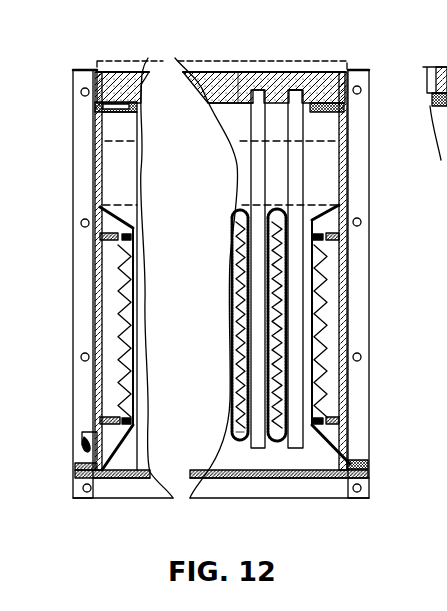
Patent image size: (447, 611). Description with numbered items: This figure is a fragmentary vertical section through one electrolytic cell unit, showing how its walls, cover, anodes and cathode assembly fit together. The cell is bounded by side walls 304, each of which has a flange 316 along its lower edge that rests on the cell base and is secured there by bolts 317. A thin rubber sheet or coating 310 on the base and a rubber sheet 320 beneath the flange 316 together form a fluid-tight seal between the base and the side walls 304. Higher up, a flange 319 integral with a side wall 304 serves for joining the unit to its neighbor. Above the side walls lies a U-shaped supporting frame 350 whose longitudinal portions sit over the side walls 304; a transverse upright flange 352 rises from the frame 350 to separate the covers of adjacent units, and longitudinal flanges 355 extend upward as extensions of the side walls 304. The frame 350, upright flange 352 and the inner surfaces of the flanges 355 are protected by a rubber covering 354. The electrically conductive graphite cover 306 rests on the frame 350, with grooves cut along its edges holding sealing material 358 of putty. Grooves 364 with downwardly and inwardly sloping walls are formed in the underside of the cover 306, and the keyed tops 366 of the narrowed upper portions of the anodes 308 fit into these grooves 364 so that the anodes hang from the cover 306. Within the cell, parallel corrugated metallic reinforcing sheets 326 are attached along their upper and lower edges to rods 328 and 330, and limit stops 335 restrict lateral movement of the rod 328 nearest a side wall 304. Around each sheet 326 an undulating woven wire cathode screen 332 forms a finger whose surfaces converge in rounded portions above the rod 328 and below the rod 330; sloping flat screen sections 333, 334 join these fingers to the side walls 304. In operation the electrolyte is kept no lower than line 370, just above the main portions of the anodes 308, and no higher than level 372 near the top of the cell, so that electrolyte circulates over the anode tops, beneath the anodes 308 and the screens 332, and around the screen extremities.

The side wall 304 is at (348, 142).
The electrically conductive cover 306 is at (132, 73).
The anode 308 is at (252, 212).
The sheet or coating 310 is at (262, 470).
The flange 316 is at (357, 463).
The bolt 317 is at (93, 479).
The flange 319 is at (369, 257).
The sheet 320 is at (369, 480).
The corrugated metallic reinforcing sheet 326 is at (233, 282).
The rod 328 is at (234, 217).
The rod 330 is at (234, 432).
The woven wire cathode screen 332 is at (231, 367).
The sloping flat screen section 333 is at (315, 219).
The sloping flat screen section 334 is at (331, 455).
The limit stop 335 is at (336, 238).
The U-shaped supporting frame 350 is at (132, 107).
The transverse upright flange 352 is at (270, 61).
The covering 354 is at (118, 116).
The longitudinal flange 355 is at (95, 98).
The sealing material 358 is at (233, 67).
The groove 364 is at (249, 100).
The top 366 is at (297, 89).
The line 370 is at (122, 204).
The level 372 is at (127, 143).